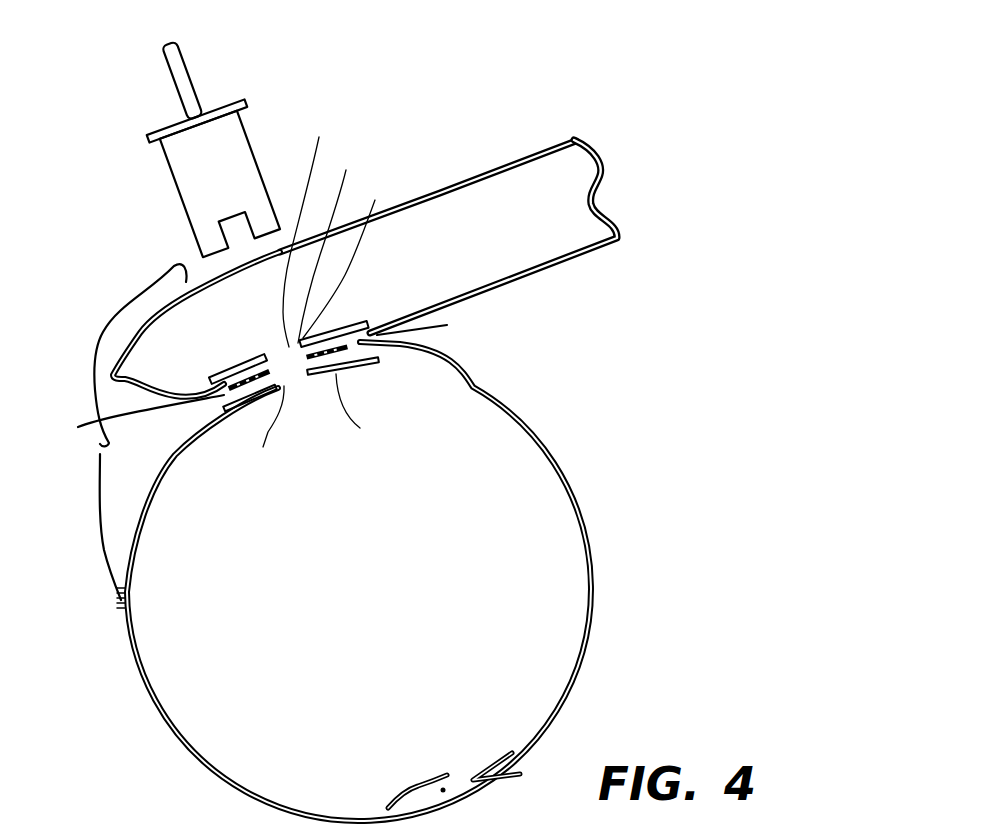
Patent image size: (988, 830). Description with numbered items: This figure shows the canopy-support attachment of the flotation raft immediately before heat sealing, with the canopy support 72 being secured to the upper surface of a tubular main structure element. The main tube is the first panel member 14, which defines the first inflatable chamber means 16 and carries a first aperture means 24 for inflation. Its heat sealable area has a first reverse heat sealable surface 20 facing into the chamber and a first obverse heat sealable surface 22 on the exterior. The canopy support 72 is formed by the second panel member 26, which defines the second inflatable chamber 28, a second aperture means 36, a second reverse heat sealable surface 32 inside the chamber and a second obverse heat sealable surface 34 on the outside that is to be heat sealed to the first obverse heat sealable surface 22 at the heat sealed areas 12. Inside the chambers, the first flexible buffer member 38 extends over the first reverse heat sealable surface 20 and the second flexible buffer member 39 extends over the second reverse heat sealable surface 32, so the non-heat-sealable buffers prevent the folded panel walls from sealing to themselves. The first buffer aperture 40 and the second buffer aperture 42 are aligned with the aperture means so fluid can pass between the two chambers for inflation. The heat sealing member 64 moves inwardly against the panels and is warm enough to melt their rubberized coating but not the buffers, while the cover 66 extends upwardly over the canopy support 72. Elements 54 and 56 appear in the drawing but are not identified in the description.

The heat sealed area 12 is at (263, 377).
The first panel member 14 is at (393, 581).
The first inflatable chamber means 16 is at (340, 611).
The first reverse heat sealable surface 20 is at (364, 409).
The first obverse heat sealable surface 22 is at (430, 349).
The first aperture means 24 is at (272, 434).
The second panel member 26 is at (407, 196).
The second inflatable chamber 28 is at (448, 202).
The second reverse heat sealable surface 32 is at (223, 383).
The second obverse heat sealable surface 34 is at (375, 331).
The second aperture means 36 is at (331, 239).
The first flexible buffer member 38 is at (228, 413).
The second flexible buffer member 39 is at (224, 362).
The first buffer aperture 40 is at (308, 377).
The second buffer aperture 42 is at (348, 253).
The seal lip 54 is at (309, 225).
The seal lip 56 is at (270, 371).
The heat sealing member 64 is at (237, 184).
The cover 66 is at (91, 348).
The canopy support 72 is at (524, 148).